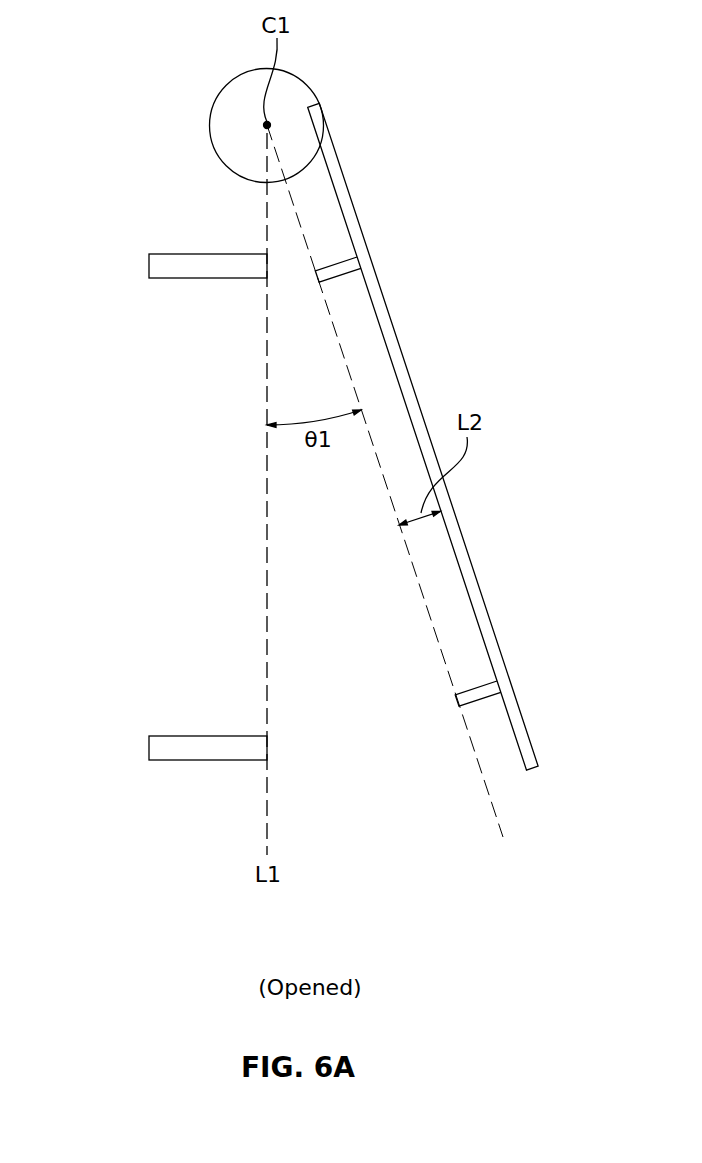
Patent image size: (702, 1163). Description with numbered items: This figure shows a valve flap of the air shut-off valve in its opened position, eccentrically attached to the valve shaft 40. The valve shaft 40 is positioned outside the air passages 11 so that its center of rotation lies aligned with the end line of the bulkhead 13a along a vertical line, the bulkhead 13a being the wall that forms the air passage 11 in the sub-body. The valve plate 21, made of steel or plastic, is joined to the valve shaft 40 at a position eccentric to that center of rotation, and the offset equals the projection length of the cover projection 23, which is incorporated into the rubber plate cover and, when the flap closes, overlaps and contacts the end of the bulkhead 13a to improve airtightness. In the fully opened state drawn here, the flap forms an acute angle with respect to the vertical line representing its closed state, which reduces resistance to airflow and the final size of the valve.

The valve shaft 40 is at (208, 123).
The valve plate 21 is at (462, 545).
The cover projection 23 is at (337, 258).
The bulkhead 13a is at (149, 262).
The air passage 11 is at (228, 501).